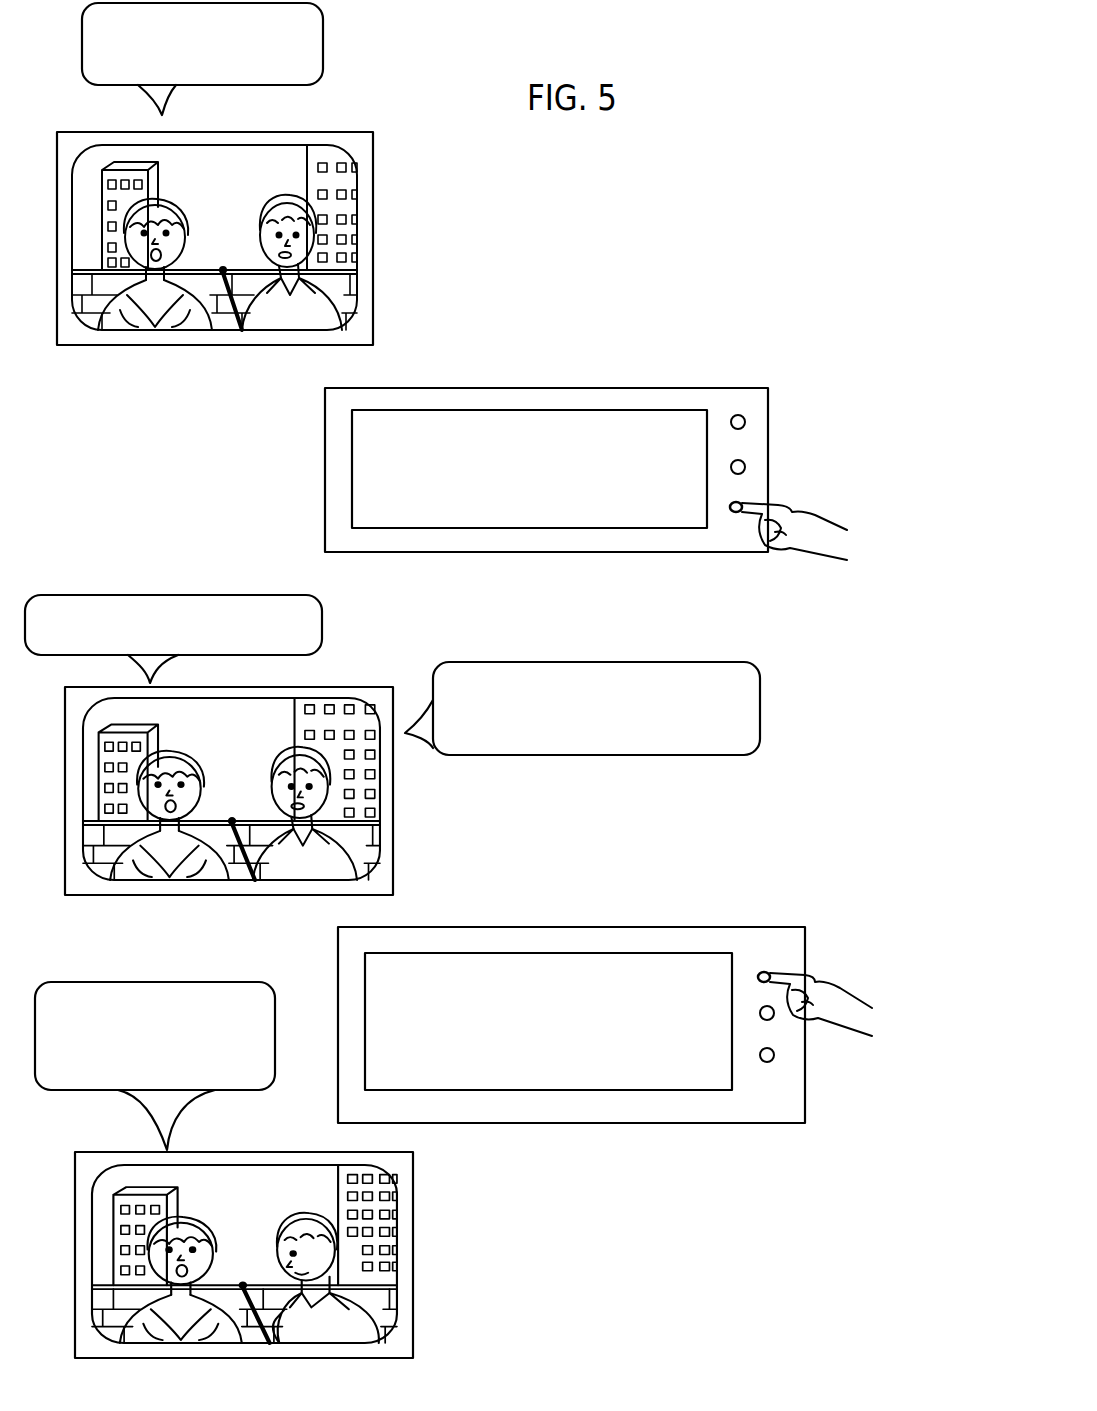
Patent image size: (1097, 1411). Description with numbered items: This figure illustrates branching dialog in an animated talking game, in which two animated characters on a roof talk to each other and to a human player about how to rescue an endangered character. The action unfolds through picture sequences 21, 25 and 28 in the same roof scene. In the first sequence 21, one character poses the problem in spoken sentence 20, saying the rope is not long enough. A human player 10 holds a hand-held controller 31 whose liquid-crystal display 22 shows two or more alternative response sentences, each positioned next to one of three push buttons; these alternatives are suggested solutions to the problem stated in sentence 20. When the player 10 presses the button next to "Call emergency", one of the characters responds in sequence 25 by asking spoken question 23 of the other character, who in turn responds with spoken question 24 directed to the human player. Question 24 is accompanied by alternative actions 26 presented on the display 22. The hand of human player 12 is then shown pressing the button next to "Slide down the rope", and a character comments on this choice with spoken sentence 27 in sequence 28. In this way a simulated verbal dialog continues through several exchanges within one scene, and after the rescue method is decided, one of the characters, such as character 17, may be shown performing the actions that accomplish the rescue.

The human player 10 is at (806, 545).
The human player 12 is at (826, 1008).
The character 17 is at (108, 325).
The spoken sentence 20 is at (323, 36).
The picture sequence 21 is at (352, 173).
The liquid-crystal display 22 is at (656, 418).
The spoken question 23 is at (158, 595).
The spoken question 24 is at (558, 662).
The picture sequence 25 is at (373, 803).
The alternative actions 26 is at (667, 962).
The spoken sentence 27 is at (192, 982).
The picture sequence 28 is at (390, 1283).
The hand-held controller 31 is at (514, 896).